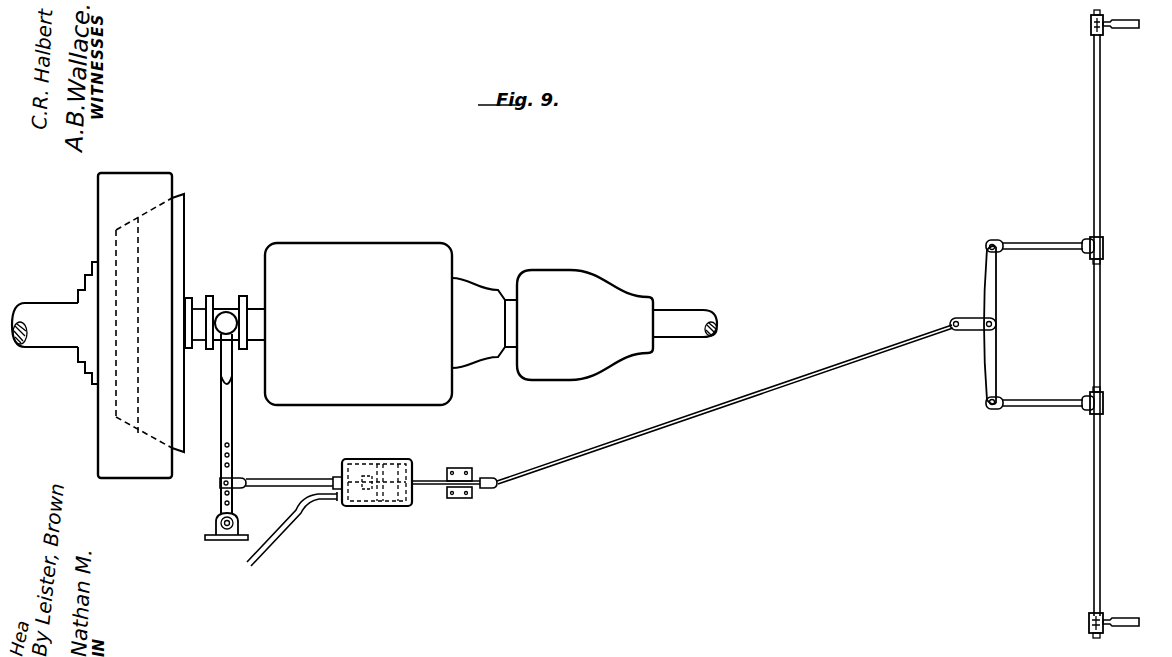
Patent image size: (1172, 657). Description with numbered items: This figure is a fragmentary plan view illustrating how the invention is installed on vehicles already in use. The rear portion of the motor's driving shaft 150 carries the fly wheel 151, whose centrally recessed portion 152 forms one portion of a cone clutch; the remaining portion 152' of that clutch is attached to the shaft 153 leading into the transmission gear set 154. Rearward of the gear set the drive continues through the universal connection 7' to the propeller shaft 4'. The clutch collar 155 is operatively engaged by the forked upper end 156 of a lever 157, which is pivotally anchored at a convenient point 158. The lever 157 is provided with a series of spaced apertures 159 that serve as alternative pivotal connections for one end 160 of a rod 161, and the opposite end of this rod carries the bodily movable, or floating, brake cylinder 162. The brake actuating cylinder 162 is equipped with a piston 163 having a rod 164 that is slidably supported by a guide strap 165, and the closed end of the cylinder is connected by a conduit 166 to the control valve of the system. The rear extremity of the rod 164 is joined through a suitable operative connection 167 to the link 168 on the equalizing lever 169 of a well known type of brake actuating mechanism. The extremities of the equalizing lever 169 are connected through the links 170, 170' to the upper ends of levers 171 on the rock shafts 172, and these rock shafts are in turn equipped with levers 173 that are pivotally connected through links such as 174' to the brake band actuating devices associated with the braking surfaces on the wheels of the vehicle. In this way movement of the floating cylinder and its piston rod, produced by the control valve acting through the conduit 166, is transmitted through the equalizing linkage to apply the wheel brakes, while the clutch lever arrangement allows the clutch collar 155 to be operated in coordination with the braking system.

The driving shaft 150 is at (42, 312).
The fly wheel 151 is at (150, 180).
The centrally recessed portion 152 is at (180, 308).
The cone clutch portion 152' is at (104, 439).
The shaft 153 is at (198, 312).
The transmission gear set 154 is at (410, 250).
The clutch collar 155 is at (227, 308).
The forked upper end 156 is at (228, 374).
The lever 157 is at (225, 427).
The pivotal anchor 158 is at (227, 541).
The spaced apertures 159 is at (230, 455).
The end of rod 160 is at (222, 484).
The rod 161 is at (300, 482).
The brake cylinder 162 is at (377, 459).
The piston 163 is at (416, 470).
The rod 164 is at (431, 488).
The guide strap 165 is at (464, 498).
The conduit 166 is at (290, 523).
The operative connection 167 is at (753, 398).
The link 168 is at (970, 318).
The equalizing lever 169 is at (988, 282).
The link 170 is at (1040, 225).
The link 170' is at (1040, 421).
The lever 171 is at (1102, 251).
The rock shaft 172 is at (1093, 118).
The lever 173 is at (1092, 26).
The link 174' is at (1127, 323).
The universal connection 7' is at (585, 305).
The propeller shaft 4' is at (685, 308).